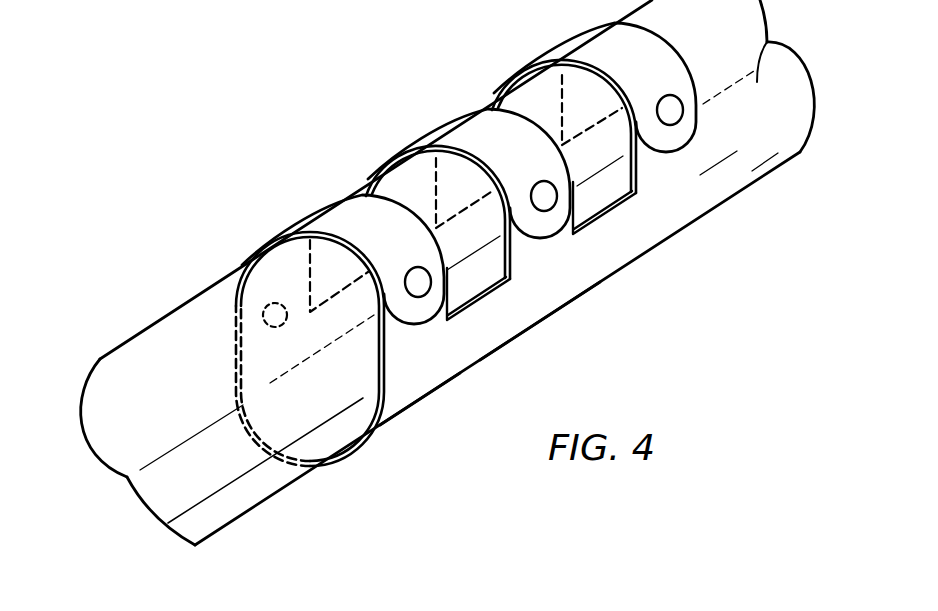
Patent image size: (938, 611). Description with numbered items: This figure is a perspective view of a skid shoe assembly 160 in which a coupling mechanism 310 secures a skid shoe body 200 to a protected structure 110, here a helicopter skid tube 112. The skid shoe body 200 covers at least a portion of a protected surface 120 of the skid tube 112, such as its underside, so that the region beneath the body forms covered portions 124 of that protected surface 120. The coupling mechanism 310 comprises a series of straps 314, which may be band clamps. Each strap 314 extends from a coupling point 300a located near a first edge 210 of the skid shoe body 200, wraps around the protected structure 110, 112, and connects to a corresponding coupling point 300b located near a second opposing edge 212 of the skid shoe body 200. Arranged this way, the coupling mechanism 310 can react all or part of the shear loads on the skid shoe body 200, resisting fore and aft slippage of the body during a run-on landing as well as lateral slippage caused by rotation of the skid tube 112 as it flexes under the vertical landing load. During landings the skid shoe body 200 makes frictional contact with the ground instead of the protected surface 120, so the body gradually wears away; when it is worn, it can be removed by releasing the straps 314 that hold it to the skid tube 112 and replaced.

The protected structure 110 is at (147, 332).
The helicopter skid tube 112 is at (147, 332).
The protected surface 120 is at (252, 498).
The covered portions 124 is at (420, 401).
The skid shoe assembly 160 is at (643, 339).
The skid shoe body 200 is at (528, 325).
The first edge 210 is at (480, 297).
The second opposing edge 212 is at (462, 190).
The coupling point 300a is at (420, 297).
The coupling point 300b is at (285, 323).
The coupling mechanism 310 is at (411, 240).
The strap 314 is at (573, 43).